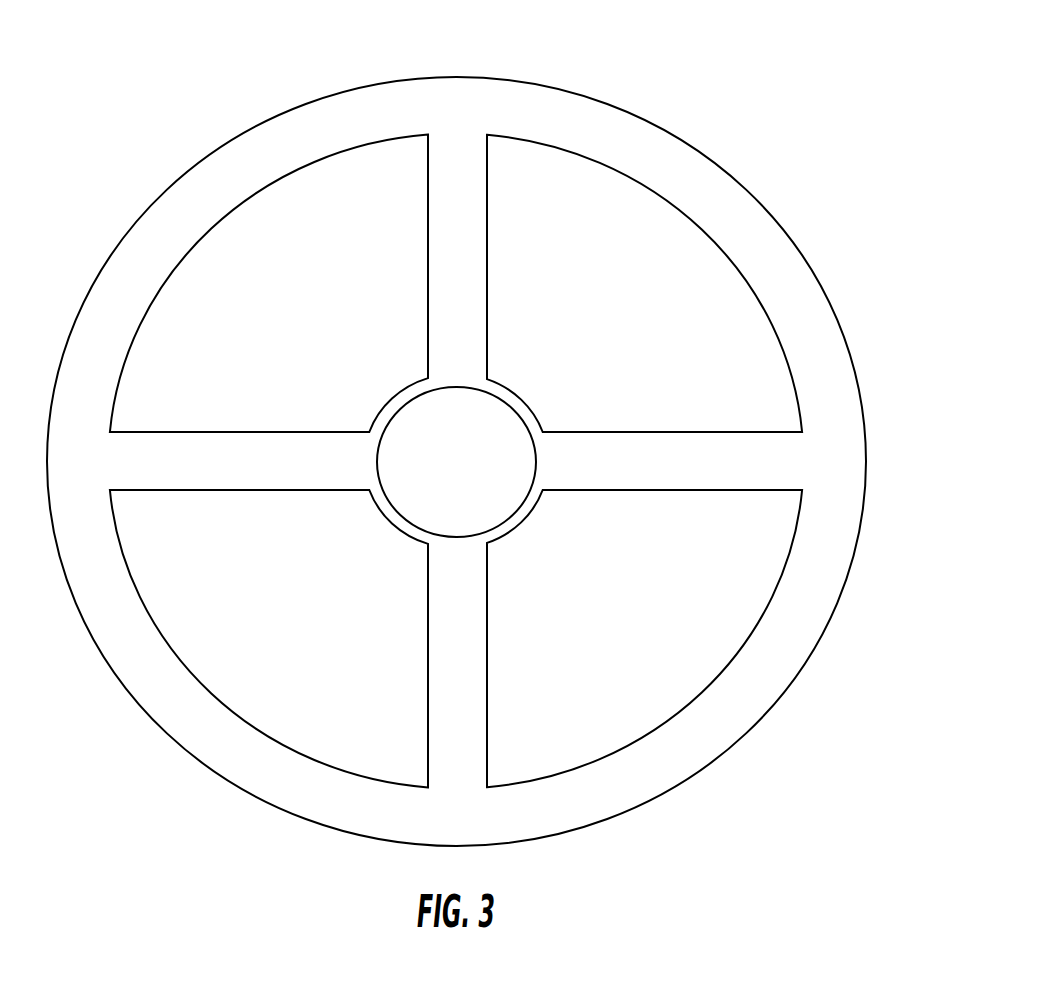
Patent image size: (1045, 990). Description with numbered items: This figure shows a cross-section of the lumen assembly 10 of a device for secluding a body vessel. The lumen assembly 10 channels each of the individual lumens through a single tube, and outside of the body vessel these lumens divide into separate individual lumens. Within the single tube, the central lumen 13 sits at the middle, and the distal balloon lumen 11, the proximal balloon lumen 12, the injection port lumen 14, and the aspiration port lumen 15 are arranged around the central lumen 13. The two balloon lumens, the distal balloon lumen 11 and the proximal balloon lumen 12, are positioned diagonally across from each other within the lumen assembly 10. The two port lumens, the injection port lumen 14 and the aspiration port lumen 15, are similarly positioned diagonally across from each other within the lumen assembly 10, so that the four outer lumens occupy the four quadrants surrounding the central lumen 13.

The lumen assembly 10 is at (524, 80).
The distal balloon lumen 11 is at (173, 330).
The proximal balloon lumen 12 is at (689, 682).
The central lumen 13 is at (482, 475).
The injection port lumen 14 is at (712, 267).
The aspiration port lumen 15 is at (265, 710).